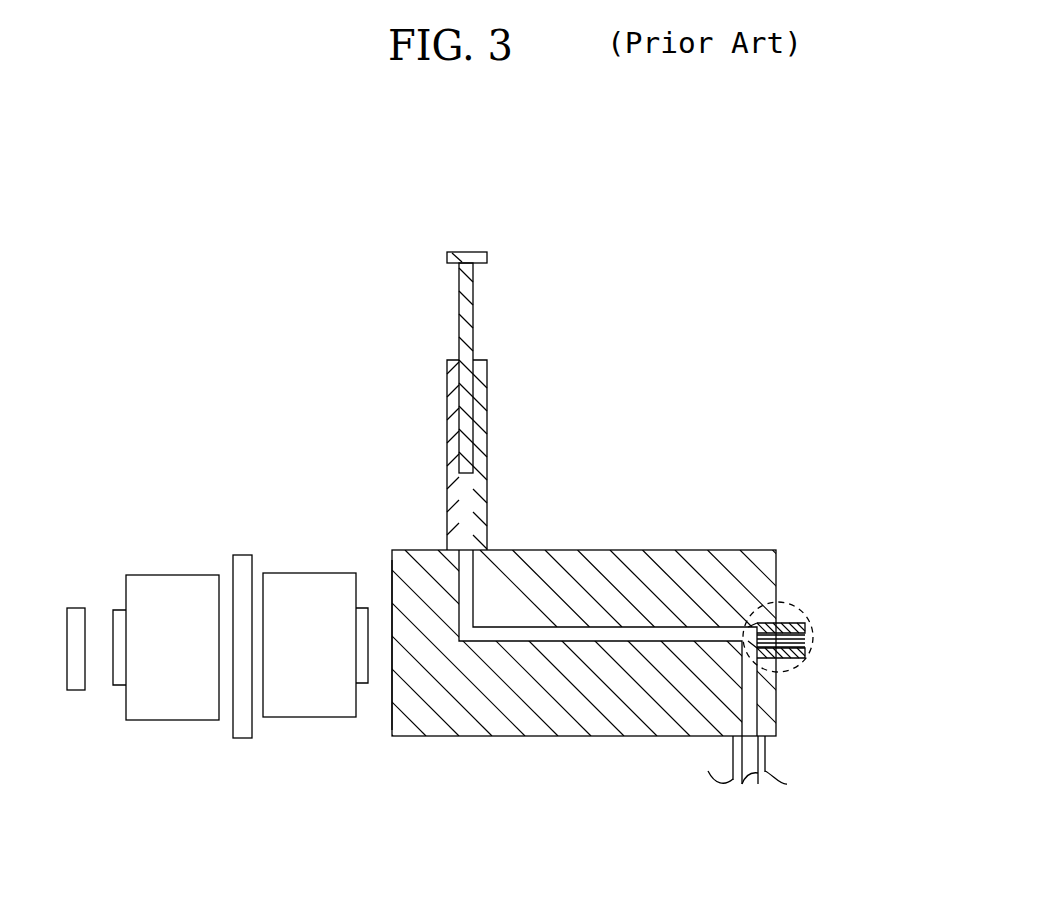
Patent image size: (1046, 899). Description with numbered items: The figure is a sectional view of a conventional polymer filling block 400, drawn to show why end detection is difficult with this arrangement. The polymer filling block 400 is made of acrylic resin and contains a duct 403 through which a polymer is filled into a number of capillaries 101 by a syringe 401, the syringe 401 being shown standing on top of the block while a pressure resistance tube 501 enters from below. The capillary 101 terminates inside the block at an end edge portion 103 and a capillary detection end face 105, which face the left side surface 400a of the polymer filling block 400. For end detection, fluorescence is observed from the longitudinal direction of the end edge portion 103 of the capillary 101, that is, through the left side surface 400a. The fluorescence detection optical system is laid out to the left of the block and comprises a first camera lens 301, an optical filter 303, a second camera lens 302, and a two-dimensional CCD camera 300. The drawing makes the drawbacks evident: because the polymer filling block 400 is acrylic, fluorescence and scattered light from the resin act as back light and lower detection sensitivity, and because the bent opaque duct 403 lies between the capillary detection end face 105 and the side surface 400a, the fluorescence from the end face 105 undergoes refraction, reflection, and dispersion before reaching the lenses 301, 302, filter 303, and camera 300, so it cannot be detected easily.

The two-dimensional CCD camera 300 is at (75, 607).
The first camera lens 301 is at (293, 573).
The second camera lens 302 is at (158, 575).
The optical filter 303 is at (242, 555).
The polymer filling block 400 is at (530, 573).
The left side surface 400a is at (393, 712).
The syringe 401 is at (487, 418).
The duct 403 is at (597, 613).
The capillary detection end face 105 is at (747, 610).
The end edge portion 103 is at (780, 601).
The capillary 101 is at (808, 635).
The tube 501 is at (765, 753).